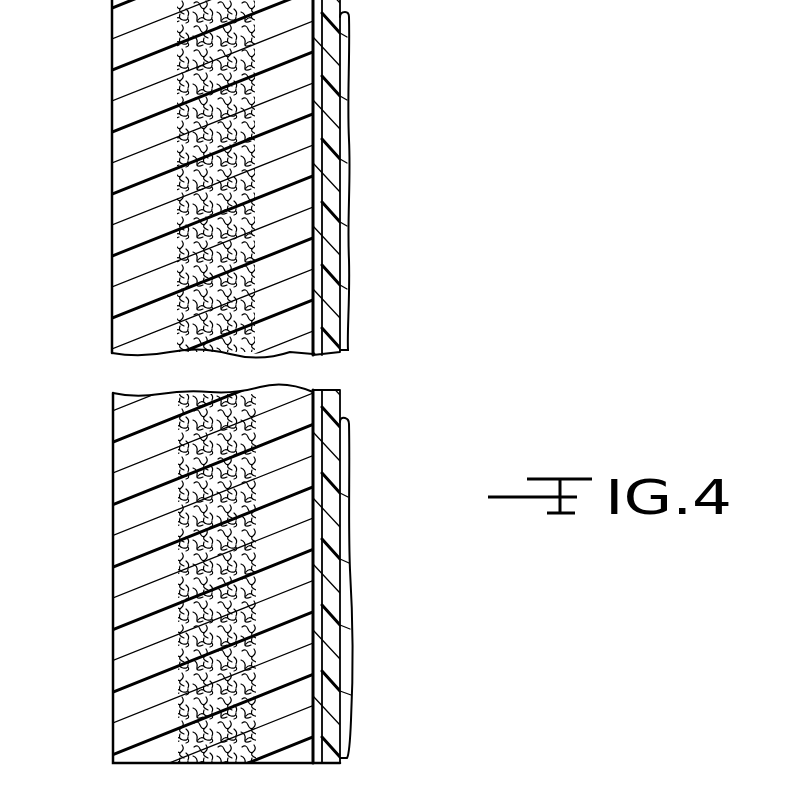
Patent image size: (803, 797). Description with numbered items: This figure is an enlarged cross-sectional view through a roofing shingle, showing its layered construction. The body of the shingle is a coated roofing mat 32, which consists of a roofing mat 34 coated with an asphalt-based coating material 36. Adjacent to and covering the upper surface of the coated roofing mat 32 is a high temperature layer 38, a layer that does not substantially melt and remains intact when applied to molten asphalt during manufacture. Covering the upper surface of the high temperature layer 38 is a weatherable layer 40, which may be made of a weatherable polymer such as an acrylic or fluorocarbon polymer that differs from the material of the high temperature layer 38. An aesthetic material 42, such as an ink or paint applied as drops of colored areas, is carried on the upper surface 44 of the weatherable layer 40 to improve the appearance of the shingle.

The coated roofing mat 32 is at (330, 187).
The roofing mat 34 is at (210, 183).
The asphalt-based coating material 36 is at (68, 40).
The high temperature layer 38 is at (345, 214).
The weatherable layer 40 is at (334, 403).
The aesthetic material 42 is at (350, 500).
The upper surface 44 is at (346, 587).